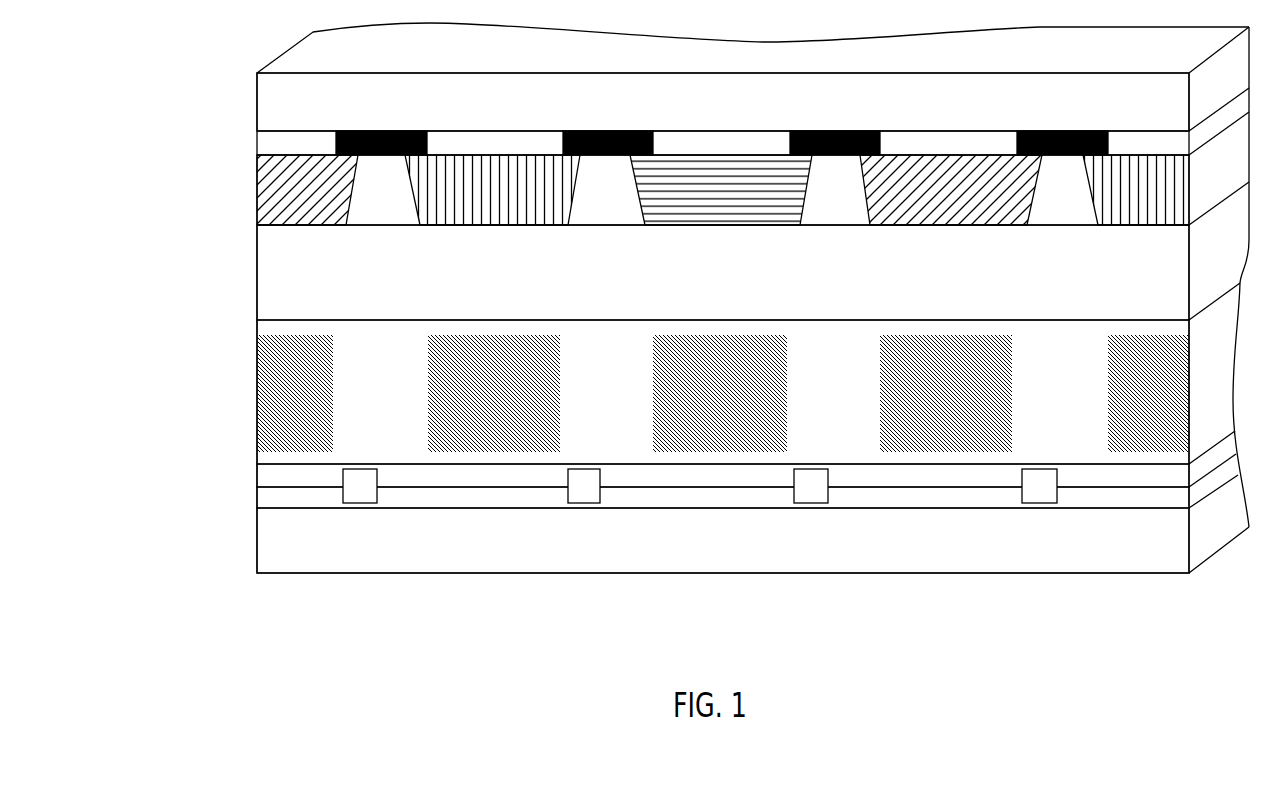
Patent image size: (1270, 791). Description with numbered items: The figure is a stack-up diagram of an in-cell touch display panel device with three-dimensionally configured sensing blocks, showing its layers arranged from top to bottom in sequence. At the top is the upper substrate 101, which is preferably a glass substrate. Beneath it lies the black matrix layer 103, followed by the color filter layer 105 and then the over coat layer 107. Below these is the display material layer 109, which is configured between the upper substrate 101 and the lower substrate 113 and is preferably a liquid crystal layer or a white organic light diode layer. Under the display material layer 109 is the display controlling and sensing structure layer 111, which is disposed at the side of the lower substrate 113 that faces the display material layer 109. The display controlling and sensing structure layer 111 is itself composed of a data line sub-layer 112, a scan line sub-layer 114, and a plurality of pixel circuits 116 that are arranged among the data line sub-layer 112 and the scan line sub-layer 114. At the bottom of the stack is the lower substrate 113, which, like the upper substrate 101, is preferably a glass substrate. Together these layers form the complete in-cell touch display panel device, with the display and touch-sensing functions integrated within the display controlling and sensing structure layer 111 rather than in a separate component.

The upper substrate 101 is at (257, 108).
The black matrix layer 103 is at (257, 145).
The color filter layer 105 is at (257, 195).
The over coat layer 107 is at (257, 271).
The display material layer 109 is at (257, 386).
The display controlling and sensing structure layer 111 is at (687, 474).
The data line sub-layer 112 is at (257, 475).
The scan line sub-layer 114 is at (257, 502).
The lower substrate 113 is at (257, 550).
The pixel circuits 116 is at (357, 498).